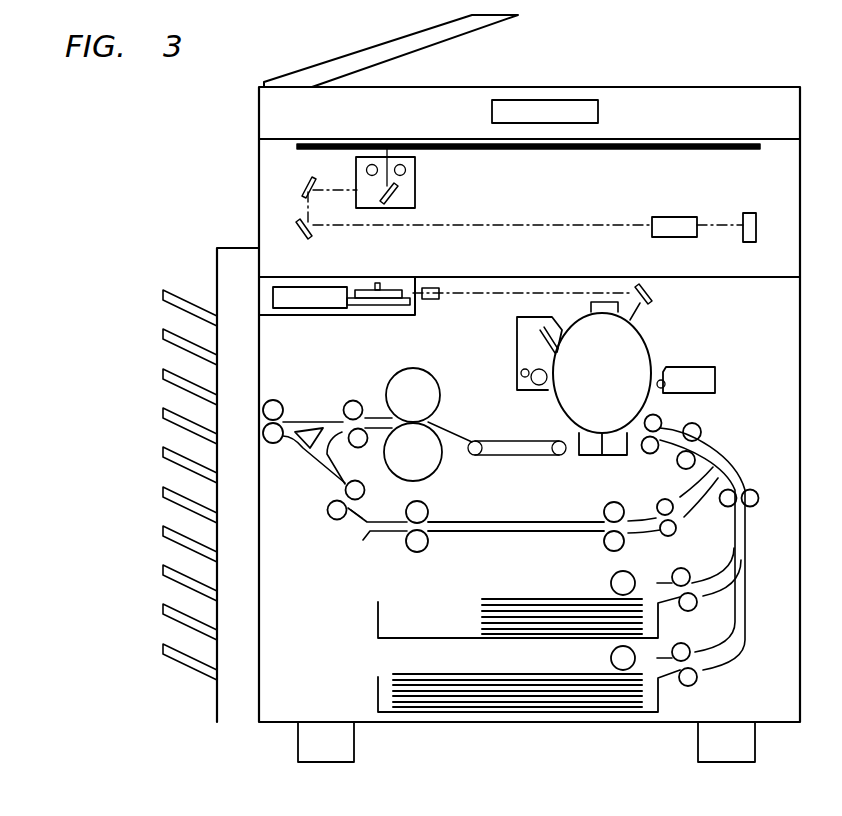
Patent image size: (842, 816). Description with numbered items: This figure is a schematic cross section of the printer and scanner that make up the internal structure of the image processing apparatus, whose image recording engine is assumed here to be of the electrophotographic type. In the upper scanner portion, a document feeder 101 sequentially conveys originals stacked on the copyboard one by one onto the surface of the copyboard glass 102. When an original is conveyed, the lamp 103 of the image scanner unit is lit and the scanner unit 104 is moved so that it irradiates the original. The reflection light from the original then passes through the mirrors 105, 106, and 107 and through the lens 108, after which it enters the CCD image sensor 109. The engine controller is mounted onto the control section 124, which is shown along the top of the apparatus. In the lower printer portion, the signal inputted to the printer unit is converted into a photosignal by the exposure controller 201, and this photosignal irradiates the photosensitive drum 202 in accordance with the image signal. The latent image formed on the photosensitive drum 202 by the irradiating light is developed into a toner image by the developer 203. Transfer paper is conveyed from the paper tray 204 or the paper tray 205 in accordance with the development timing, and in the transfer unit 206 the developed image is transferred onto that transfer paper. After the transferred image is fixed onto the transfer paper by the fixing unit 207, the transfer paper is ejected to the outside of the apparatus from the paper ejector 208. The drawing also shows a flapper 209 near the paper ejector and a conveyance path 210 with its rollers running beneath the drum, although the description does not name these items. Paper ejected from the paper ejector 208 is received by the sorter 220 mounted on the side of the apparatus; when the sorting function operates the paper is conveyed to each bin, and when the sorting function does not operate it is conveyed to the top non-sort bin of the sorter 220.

The document feeder 101 is at (350, 53).
The copyboard glass 102 is at (717, 148).
The lamp 103 is at (402, 165).
The scanner unit 104 is at (417, 180).
The mirror 105 is at (413, 198).
The mirror 106 is at (303, 185).
The mirror 107 is at (302, 222).
The lens 108 is at (688, 217).
The CCD image sensor 109 is at (753, 213).
The control section 124 is at (567, 100).
The exposure controller 201 is at (381, 305).
The photosensitive drum 202 is at (567, 401).
The developer 203 is at (695, 387).
The paper tray 204 is at (653, 627).
The paper tray 205 is at (653, 703).
The transfer unit 206 is at (612, 455).
The fixing unit 207 is at (428, 422).
The paper ejector 208 is at (275, 400).
The flapper 209 is at (310, 464).
The conveyance path 210 is at (507, 532).
The sorter 220 is at (238, 722).